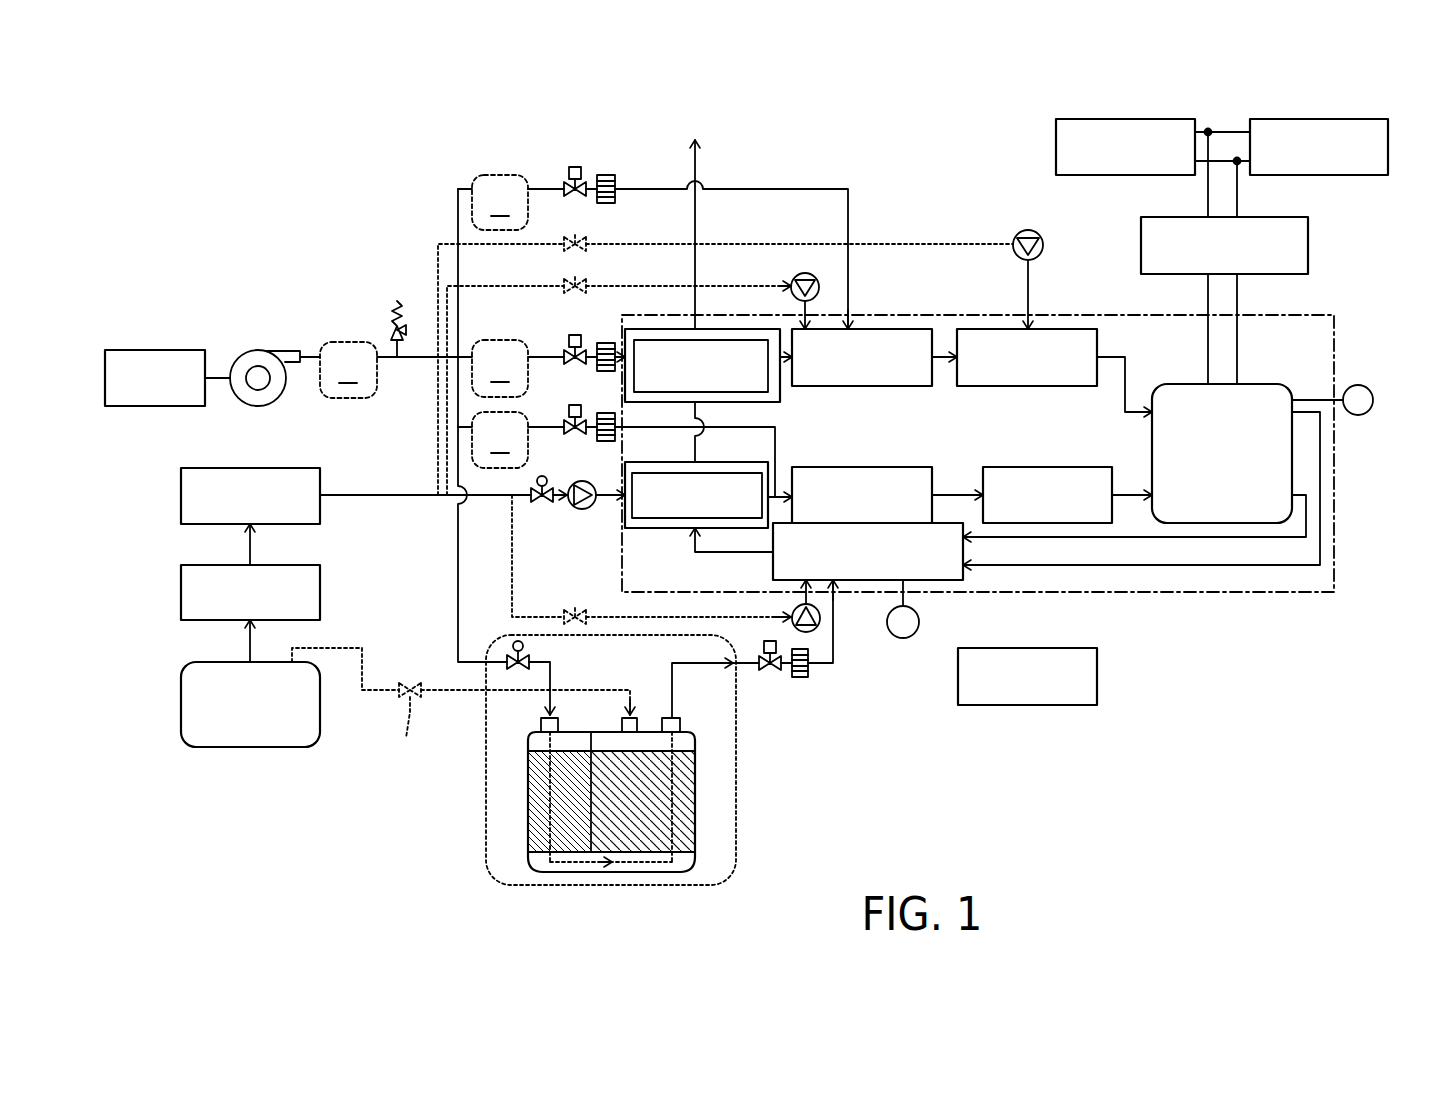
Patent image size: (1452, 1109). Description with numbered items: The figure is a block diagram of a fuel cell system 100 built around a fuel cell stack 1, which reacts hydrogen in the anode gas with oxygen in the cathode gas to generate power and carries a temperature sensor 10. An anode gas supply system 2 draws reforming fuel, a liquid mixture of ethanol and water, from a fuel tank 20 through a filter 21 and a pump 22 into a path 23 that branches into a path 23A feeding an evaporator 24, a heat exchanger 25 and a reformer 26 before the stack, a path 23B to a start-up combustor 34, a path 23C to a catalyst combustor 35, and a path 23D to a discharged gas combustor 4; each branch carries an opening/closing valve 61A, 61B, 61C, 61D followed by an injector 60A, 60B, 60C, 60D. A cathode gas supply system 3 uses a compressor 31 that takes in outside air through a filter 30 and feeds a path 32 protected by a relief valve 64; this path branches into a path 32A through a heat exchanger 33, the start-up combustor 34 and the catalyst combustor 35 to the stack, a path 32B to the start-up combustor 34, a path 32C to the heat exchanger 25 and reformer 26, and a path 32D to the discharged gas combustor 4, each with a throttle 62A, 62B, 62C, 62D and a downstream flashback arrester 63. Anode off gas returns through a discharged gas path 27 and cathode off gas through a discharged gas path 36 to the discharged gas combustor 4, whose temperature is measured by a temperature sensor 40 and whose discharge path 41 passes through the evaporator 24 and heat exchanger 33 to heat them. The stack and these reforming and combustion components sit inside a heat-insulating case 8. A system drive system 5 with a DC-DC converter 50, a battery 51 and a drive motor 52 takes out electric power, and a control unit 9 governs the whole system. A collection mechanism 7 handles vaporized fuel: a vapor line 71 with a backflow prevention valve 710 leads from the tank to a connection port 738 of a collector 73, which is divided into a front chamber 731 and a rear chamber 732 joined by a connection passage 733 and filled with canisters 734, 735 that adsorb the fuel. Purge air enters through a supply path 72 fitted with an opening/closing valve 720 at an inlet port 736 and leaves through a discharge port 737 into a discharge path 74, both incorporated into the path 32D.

The fuel cell stack 1 is at (1268, 383).
The anode gas supply system 2 is at (140, 543).
The cathode gas supply system 3 is at (190, 292).
The discharged gas combustor 4 is at (866, 581).
The system drive system 5 is at (1393, 233).
The collection mechanism 7 is at (736, 808).
The heat-insulating case 8 is at (1224, 595).
The control unit 9 is at (1053, 707).
The temperature sensor 10 is at (1358, 384).
The fuel tank 20 is at (181, 712).
The filter 21 is at (181, 590).
The pump 22 is at (181, 496).
The path 23 is at (346, 495).
The path 23A is at (485, 499).
The path 23B is at (487, 288).
The path 23C is at (500, 246).
The path 23D is at (514, 594).
The evaporator 24 is at (729, 462).
The heat exchanger 25 is at (862, 466).
The reformer 26 is at (1028, 466).
The discharged gas path 27 is at (1306, 523).
The filter 30 is at (150, 350).
The compressor 31 is at (252, 351).
The path 32 is at (312, 357).
The path 32A is at (540, 357).
The path 32B is at (540, 189).
The path 32C is at (535, 432).
The path 32D is at (458, 590).
The heat exchanger 33 is at (748, 328).
The start-up combustor 34 is at (888, 328).
The catalyst combustor 35 is at (1050, 328).
The discharged gas path 36 is at (1320, 460).
The temperature sensor 40 is at (905, 638).
The discharge path 41 is at (697, 163).
The DC-DC converter 50 is at (1308, 245).
The battery 51 is at (1117, 177).
The drive motor 52 is at (1337, 177).
The injector 60A is at (582, 509).
The injector 60B is at (792, 282).
The injector 60C is at (1018, 236).
The injector 60D is at (818, 626).
The opening/closing valve 61A is at (542, 502).
The opening/closing valve 61B is at (584, 280).
The opening/closing valve 61C is at (572, 234).
The opening/closing valve 61D is at (576, 604).
The throttle 62A is at (575, 333).
The throttle 62B is at (575, 165).
The throttle 62C is at (575, 404).
The throttle 62D is at (766, 674).
The flashback arrester 63 is at (606, 204).
The relief valve 64 is at (395, 315).
The vapor line 71 is at (370, 697).
The supply path 72 is at (550, 655).
The collector 73 is at (695, 825).
The discharge path 74 is at (708, 665).
The fuel cell system 100 is at (805, 140).
The backflow prevention valve 710 is at (408, 731).
The opening/closing valve 720 is at (508, 656).
The front chamber 731 is at (563, 828).
The rear chamber 732 is at (648, 828).
The connection passage 733 is at (598, 870).
The canister 734 is at (528, 818).
The canister 735 is at (695, 778).
The inlet port 736 is at (540, 726).
The discharge port 737 is at (680, 726).
The connection port 738 is at (634, 712).